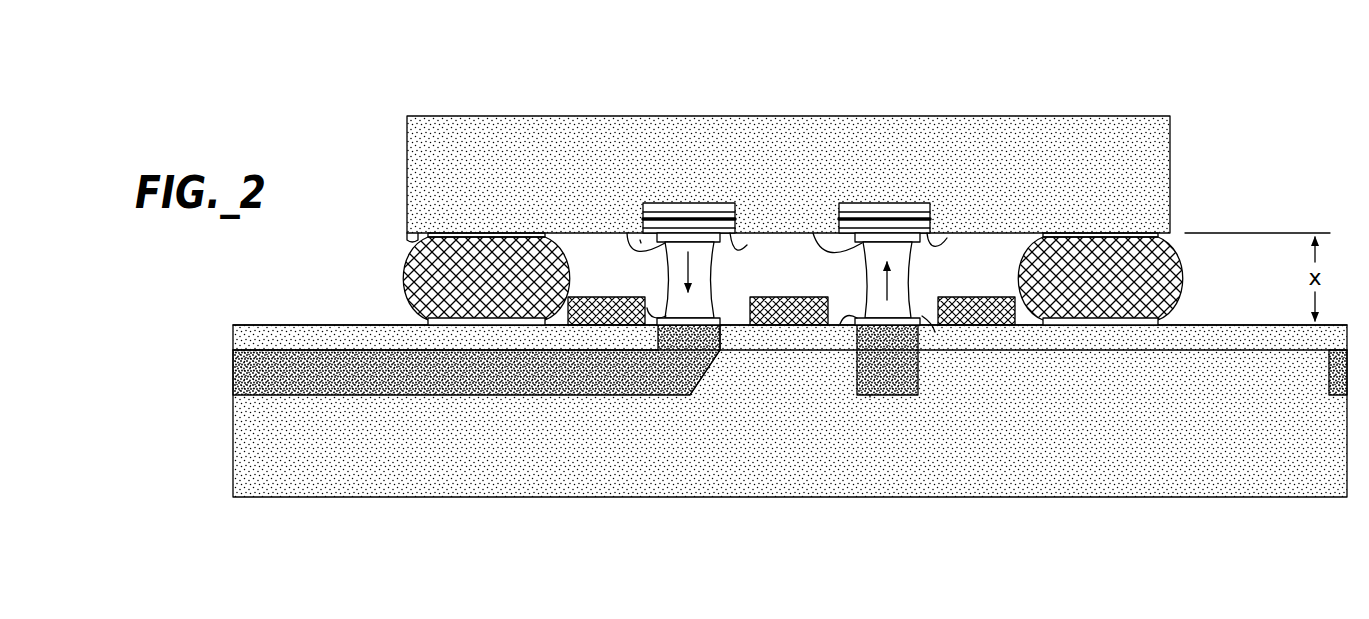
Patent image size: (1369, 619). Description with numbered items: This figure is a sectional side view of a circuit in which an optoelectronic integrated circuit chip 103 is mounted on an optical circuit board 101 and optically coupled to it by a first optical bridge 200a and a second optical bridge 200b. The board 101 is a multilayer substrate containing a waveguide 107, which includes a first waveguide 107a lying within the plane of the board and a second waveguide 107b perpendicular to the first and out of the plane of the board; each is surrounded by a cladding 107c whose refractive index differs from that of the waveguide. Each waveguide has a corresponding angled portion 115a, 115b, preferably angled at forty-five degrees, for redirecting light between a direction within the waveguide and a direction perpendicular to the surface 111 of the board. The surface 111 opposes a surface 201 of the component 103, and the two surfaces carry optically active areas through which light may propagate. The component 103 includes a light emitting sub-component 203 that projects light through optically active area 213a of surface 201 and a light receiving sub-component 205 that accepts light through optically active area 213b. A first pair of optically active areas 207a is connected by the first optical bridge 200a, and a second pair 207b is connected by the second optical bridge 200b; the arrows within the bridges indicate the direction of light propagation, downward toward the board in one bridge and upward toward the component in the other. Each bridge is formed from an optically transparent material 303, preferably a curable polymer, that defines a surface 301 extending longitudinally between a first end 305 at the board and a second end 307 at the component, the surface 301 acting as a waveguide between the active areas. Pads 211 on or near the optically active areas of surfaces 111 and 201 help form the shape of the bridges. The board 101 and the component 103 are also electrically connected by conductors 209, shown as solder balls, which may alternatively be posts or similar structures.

The optical circuit board 101 is at (288, 515).
The optoelectronic integrated circuit chip 103 is at (411, 98).
The waveguide 107 is at (736, 422).
The first waveguide 107a is at (233, 370).
The second waveguide 107b is at (870, 397).
The cladding 107c is at (233, 333).
The surface 111 is at (310, 324).
The angled portion 115a is at (705, 378).
The angled portion 115b is at (919, 385).
The first optical bridge 200a is at (668, 273).
The second optical bridge 200b is at (910, 277).
The surface 201 is at (407, 248).
The light emitting sub-component 203 is at (667, 218).
The light receiving sub-component 205 is at (887, 203).
The first pair of optically active areas 207a is at (685, 177).
The second pair of optically active areas 207b is at (981, 182).
The conductors 209 is at (412, 282).
The pads 211 is at (641, 240).
The optically active area 213a is at (730, 237).
The optically active area 213b is at (957, 235).
The surface 301 is at (667, 302).
The material 303 is at (703, 300).
The first end 305 is at (647, 308).
The second end 307 is at (627, 233).